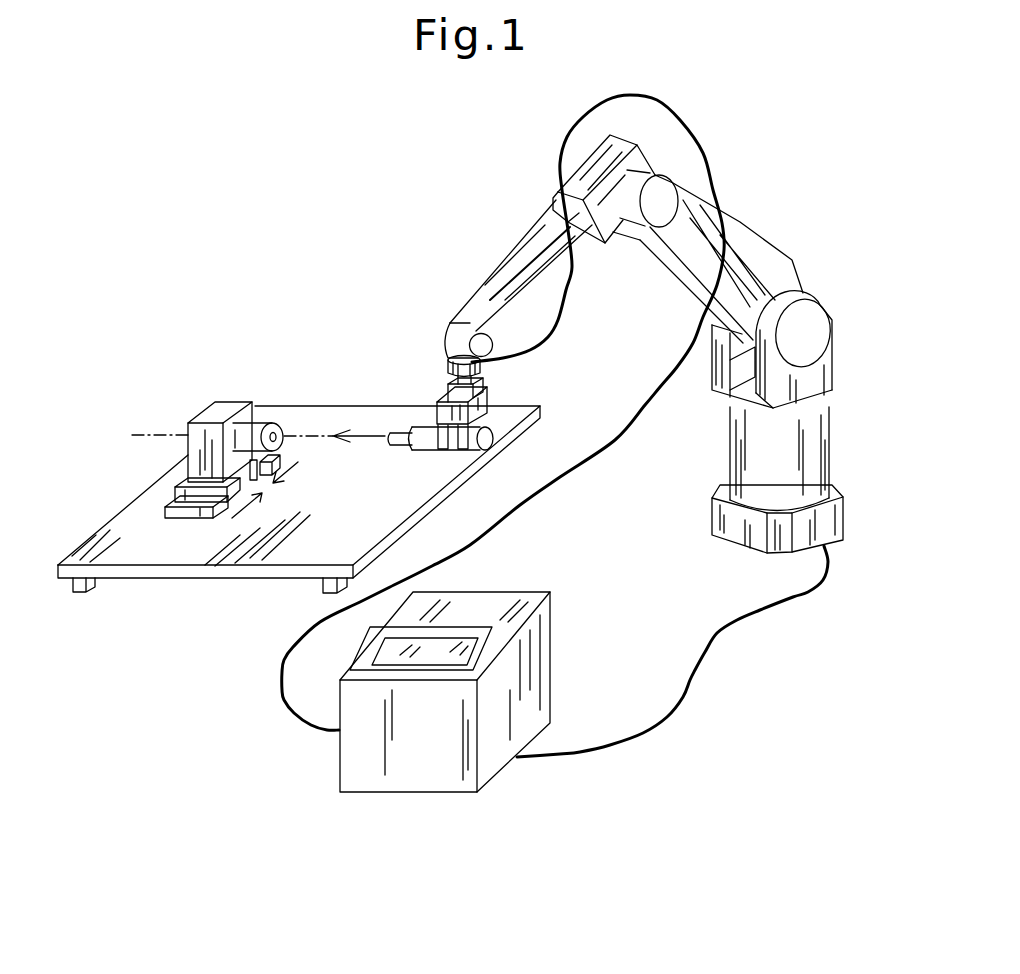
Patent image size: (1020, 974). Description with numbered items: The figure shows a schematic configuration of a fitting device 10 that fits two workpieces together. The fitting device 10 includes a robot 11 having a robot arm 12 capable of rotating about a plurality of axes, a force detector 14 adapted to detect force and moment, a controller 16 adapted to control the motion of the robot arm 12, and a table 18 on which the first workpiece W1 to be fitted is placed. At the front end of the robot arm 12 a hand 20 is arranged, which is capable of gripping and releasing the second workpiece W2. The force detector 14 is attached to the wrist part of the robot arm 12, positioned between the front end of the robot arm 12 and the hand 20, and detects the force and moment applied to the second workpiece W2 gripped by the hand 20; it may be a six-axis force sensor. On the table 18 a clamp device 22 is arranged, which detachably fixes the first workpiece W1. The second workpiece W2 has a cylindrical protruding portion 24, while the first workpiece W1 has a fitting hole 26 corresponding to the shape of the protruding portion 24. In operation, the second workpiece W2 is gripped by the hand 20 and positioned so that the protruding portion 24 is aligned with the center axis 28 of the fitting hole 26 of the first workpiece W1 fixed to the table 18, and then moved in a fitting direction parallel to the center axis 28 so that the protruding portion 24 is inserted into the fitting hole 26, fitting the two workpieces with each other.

The fitting device 10 is at (720, 748).
The robot 11 is at (838, 551).
The robot arm 12 is at (518, 272).
The force detector 14 is at (448, 362).
The controller 16 is at (500, 778).
The table 18 is at (166, 560).
The hand 20 is at (443, 418).
The clamp device 22 is at (175, 505).
The protruding portion 24 is at (400, 446).
The fitting hole 26 is at (280, 430).
The center axis 28 is at (180, 435).
The first workpiece W1 is at (231, 400).
The second workpiece W2 is at (428, 447).